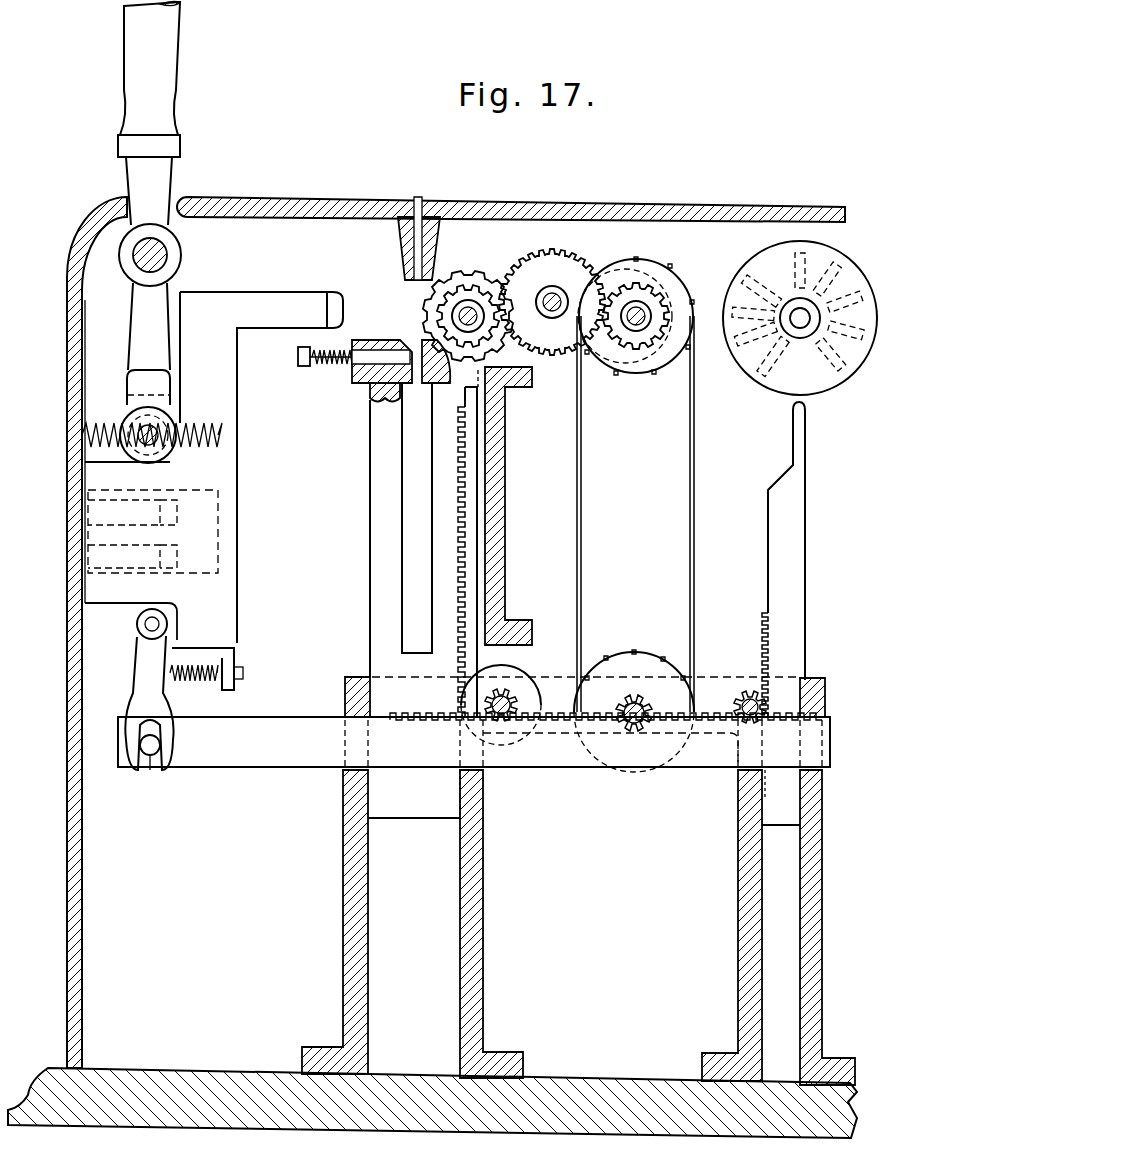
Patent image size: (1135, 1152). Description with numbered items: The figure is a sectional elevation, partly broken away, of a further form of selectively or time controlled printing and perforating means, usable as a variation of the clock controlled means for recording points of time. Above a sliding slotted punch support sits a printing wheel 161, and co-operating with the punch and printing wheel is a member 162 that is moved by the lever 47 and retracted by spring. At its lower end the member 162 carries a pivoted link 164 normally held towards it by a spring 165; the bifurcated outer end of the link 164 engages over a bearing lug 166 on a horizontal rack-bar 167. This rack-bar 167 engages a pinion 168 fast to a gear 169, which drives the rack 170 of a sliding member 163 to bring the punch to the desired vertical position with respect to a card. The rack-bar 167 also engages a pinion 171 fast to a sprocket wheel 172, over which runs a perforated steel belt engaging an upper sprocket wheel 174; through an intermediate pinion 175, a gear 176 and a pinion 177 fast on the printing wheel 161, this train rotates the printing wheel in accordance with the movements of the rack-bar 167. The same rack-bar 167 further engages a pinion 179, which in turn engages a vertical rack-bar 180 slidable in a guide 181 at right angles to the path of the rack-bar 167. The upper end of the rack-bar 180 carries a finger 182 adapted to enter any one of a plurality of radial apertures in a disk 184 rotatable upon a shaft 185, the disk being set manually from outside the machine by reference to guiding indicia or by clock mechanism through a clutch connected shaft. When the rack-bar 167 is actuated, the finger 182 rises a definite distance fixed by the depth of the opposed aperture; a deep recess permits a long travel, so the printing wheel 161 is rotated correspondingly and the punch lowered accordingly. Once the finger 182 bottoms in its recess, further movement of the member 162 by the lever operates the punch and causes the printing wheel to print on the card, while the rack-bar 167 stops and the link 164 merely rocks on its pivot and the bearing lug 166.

The lever 47 is at (165, 80).
The printing wheel 161 is at (433, 297).
The member 162 is at (222, 470).
The sliding member 163 is at (378, 580).
The link 164 is at (150, 687).
The spring 165 is at (233, 666).
The bearing lug 166 is at (150, 756).
The rack-bar 167 is at (474, 740).
The pinion 168 is at (510, 720).
The gear 169 is at (512, 673).
The rack 170 is at (468, 585).
The pinion 171 is at (645, 724).
The sprocket wheel 172 is at (622, 660).
The sprocket wheel 174 is at (662, 290).
The intermediate pinion 175 is at (636, 338).
The gear 176 is at (568, 272).
The pinion 177 is at (476, 296).
The pinion 179 is at (745, 694).
The rack-bar 180 is at (765, 633).
The guide 181 is at (770, 912).
The finger 182 is at (800, 452).
The disk 184 is at (818, 384).
The shaft 185 is at (803, 328).